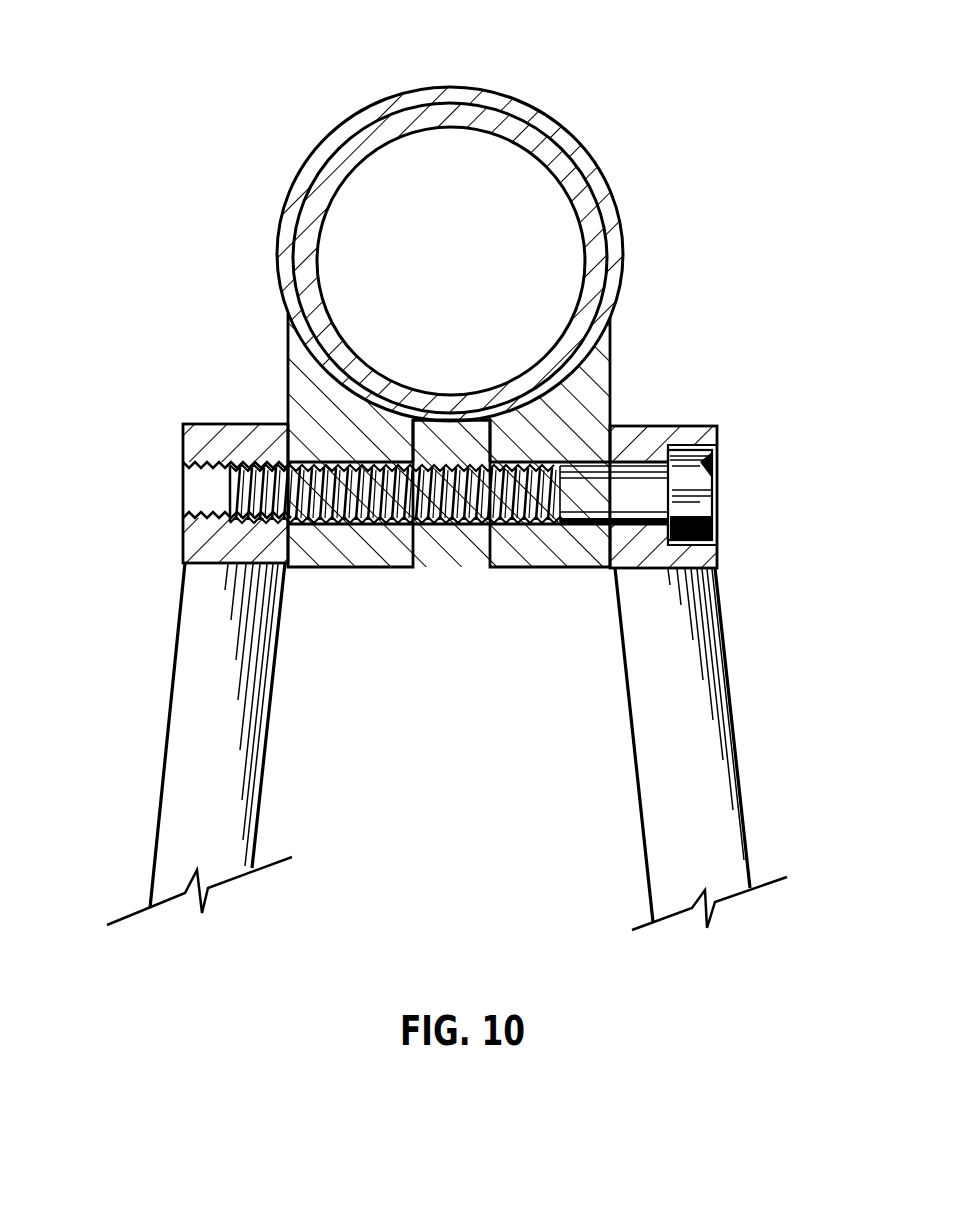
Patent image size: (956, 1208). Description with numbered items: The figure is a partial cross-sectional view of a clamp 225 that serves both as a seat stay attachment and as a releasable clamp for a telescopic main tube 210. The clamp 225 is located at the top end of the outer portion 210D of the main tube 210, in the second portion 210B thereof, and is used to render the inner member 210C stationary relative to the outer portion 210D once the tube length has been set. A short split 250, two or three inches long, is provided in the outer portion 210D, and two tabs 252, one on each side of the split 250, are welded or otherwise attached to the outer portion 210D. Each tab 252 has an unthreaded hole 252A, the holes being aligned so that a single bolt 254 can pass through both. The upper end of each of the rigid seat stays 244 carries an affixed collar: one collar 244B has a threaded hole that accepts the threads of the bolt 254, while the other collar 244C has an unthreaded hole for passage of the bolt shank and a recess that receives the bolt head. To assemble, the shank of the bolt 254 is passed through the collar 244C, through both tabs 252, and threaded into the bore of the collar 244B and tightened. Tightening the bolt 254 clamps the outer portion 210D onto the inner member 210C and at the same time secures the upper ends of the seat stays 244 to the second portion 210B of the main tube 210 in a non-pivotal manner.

The main tube 210 is at (438, 217).
The second portion of main tube 210B is at (307, 165).
The inner member 210C is at (592, 227).
The outer portion of main tube 210D is at (577, 143).
The clamp 225 is at (615, 378).
The seat stays 244 is at (160, 782).
The collar with threaded hole 244B is at (238, 422).
The collar with unthreaded hole 244C is at (657, 426).
The split 250 is at (450, 440).
The tabs 252 is at (307, 563).
The unthreaded hole 252A is at (372, 525).
The bolt 254 is at (592, 493).